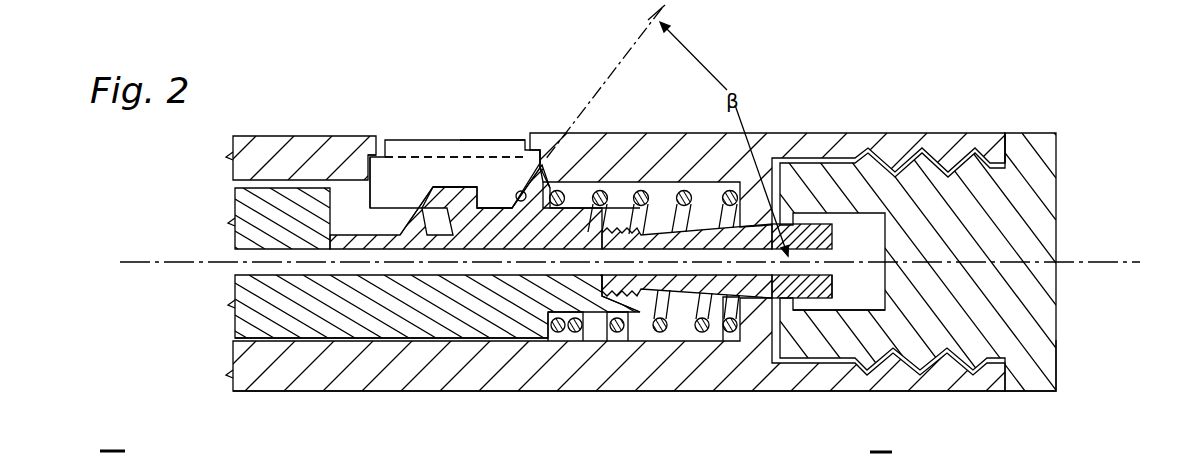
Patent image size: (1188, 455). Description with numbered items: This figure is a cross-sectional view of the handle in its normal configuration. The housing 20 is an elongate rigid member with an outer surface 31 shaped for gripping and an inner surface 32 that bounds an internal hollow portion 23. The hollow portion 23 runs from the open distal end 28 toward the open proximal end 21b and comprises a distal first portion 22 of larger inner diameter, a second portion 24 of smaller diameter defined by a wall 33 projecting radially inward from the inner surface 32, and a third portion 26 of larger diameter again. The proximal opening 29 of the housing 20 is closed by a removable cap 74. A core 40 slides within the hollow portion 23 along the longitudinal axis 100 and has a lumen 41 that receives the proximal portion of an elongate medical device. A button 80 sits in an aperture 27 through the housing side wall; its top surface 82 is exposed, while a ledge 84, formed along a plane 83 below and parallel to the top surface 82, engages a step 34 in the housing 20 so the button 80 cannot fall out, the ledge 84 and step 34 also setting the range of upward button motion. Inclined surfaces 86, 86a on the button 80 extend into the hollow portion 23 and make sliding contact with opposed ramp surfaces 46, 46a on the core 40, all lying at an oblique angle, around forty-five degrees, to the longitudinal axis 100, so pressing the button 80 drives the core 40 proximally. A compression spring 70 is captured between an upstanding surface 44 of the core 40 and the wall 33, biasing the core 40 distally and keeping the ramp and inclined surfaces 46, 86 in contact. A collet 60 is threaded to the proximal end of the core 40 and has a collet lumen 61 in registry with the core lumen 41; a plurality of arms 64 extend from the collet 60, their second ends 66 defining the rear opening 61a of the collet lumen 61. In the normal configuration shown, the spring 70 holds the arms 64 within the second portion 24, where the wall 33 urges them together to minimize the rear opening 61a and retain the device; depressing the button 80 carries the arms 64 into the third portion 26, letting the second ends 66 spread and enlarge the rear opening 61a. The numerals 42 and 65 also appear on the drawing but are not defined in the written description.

The longitudinal axis 100 is at (1124, 258).
The ledge 84 is at (365, 178).
The step 34 is at (371, 150).
The top surface 82 is at (433, 140).
The button 80 is at (397, 140).
The hollow portion 23 is at (470, 140).
The plane 83 is at (495, 140).
The core 40 is at (472, 327).
The inclined surface 86a is at (457, 195).
The ramp surface 46a is at (400, 233).
The ramp surface 46 is at (503, 216).
The inclined surface 86 is at (521, 192).
The lumen 41 is at (238, 258).
The proximal end 21b is at (897, 133).
The proximal opening 29 is at (1006, 135).
The aperture 27 is at (548, 190).
The upstanding surface 44 is at (556, 182).
The first portion 22 is at (660, 197).
The collet 60 is at (757, 233).
The collet lumen 61 is at (757, 263).
The arms 64 is at (837, 235).
The sleeve end face 65 is at (832, 285).
The second ends 66 is at (835, 290).
The rear opening 61a is at (820, 253).
The third portion 26 is at (870, 272).
The wall 33 is at (793, 312).
The cap 74 is at (1047, 380).
The housing 20 is at (504, 372).
The outer surface 31 is at (393, 389).
The inner surface 32 is at (360, 338).
The open distal end 28 is at (243, 340).
The teeth 42 is at (645, 290).
The spring 70 is at (583, 330).
The second portion 24 is at (740, 292).